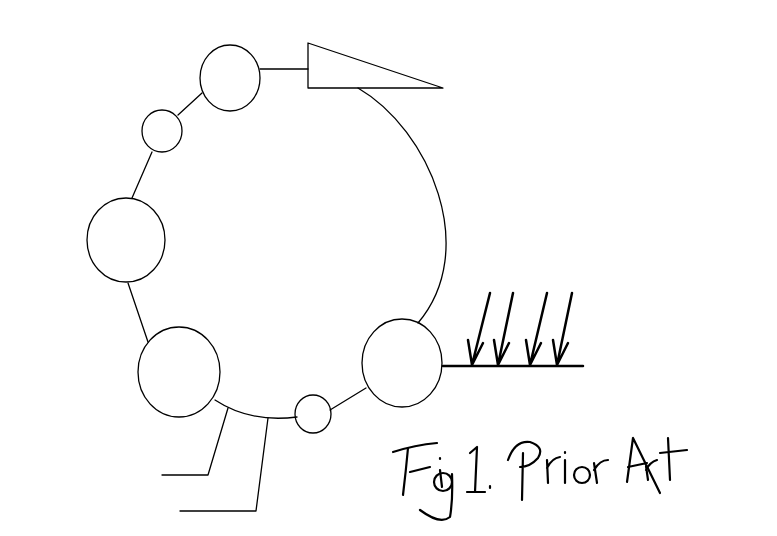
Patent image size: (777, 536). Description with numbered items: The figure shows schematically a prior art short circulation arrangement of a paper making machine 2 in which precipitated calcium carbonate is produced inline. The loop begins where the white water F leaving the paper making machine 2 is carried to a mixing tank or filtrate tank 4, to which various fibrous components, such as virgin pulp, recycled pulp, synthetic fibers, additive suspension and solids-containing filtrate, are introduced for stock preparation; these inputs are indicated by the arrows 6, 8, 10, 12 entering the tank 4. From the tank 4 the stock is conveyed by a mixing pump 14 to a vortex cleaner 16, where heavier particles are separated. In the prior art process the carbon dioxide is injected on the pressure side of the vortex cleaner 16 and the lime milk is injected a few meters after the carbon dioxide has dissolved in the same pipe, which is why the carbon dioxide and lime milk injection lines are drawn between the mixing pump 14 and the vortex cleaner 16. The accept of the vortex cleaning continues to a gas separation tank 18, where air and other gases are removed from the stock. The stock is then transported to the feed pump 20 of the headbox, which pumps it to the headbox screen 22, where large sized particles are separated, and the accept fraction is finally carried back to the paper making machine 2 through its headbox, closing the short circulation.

The paper making machine 2 is at (365, 68).
The mixing tank or filtrate tank 4 is at (423, 338).
The light input 6 is at (484, 313).
The light input 8 is at (508, 313).
The light input 10 is at (544, 313).
The light input 12 is at (571, 313).
The mixing pump 14 is at (313, 408).
The vortex cleaner 16 is at (189, 397).
The gas separation tank 18 is at (117, 235).
The feed pump 20 is at (158, 130).
The headbox screen 22 is at (217, 63).
The white water F is at (430, 157).